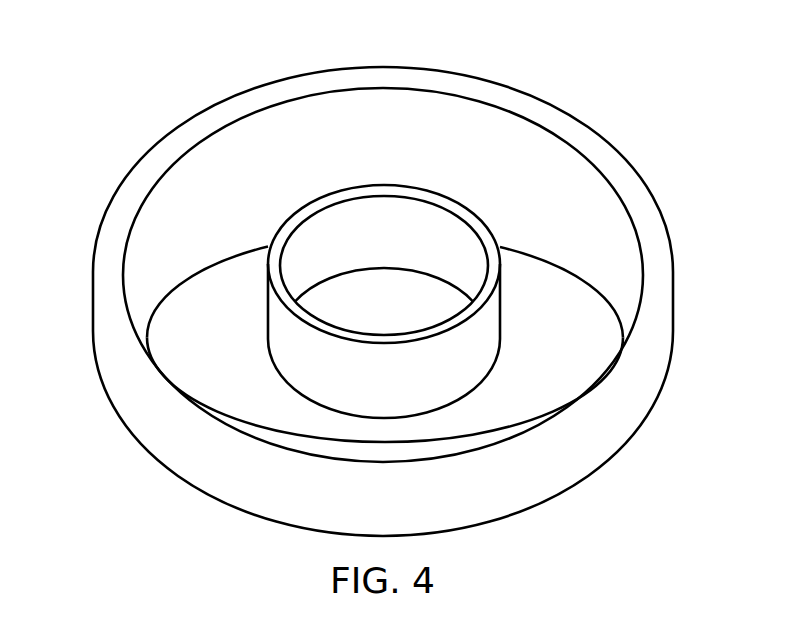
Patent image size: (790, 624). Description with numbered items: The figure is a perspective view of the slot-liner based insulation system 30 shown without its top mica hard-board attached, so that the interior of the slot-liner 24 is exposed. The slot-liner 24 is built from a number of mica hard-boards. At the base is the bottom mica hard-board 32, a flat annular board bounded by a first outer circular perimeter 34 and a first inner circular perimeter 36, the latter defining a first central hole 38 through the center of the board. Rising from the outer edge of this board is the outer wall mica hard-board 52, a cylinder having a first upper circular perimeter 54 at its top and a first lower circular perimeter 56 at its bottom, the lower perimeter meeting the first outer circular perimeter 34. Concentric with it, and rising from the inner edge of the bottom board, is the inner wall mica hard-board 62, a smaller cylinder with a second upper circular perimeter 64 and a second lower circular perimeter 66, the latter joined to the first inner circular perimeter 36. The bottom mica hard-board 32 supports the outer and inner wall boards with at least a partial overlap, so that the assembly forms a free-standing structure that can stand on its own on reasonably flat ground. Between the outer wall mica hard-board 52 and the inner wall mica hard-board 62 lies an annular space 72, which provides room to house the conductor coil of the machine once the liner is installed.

The slot-liner based insulation system 30 is at (149, 59).
The slot-liner 24 is at (133, 149).
The bottom mica hard-board 32 is at (168, 342).
The first outer circular perimeter 34 is at (168, 293).
The first inner circular perimeter 36 is at (283, 376).
The first central hole 38 is at (392, 317).
The outer wall mica hard-board 52 is at (557, 160).
The first upper circular perimeter 54 is at (447, 82).
The first lower circular perimeter 56 is at (568, 272).
The inner wall mica hard-board 62 is at (484, 362).
The second upper circular perimeter 64 is at (337, 197).
The second lower circular perimeter 66 is at (379, 268).
The annular space 72 is at (618, 287).